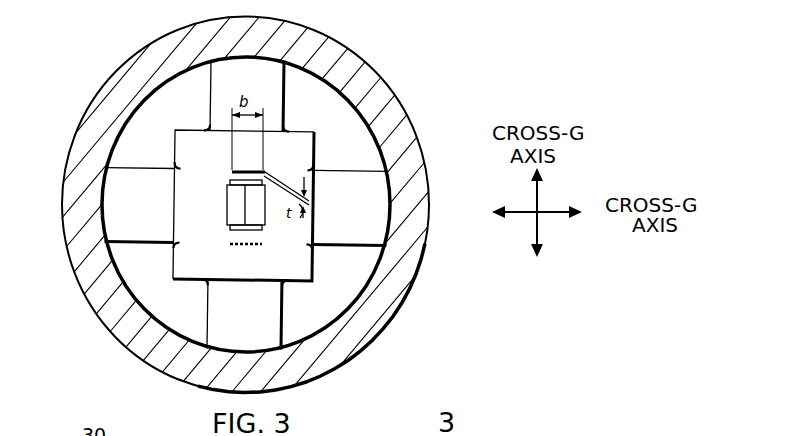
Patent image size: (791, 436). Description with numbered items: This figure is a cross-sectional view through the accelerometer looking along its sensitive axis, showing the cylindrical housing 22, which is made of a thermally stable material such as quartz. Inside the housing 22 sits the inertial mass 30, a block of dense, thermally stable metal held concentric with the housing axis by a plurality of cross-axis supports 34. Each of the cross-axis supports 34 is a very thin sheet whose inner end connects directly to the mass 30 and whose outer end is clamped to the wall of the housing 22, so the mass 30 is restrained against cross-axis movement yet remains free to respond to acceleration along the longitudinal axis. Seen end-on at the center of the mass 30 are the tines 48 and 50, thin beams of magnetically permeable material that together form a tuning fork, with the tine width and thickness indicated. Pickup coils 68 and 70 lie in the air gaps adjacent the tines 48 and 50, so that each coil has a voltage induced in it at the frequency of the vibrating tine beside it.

The cylindrical housing 22 is at (350, 53).
The cross-axis supports 34 is at (209, 93).
The inertial mass 30 is at (186, 281).
The tine 48 is at (232, 171).
The pickup coil 68 is at (260, 177).
The pickup coil 70 is at (232, 231).
The tine 50 is at (257, 246).